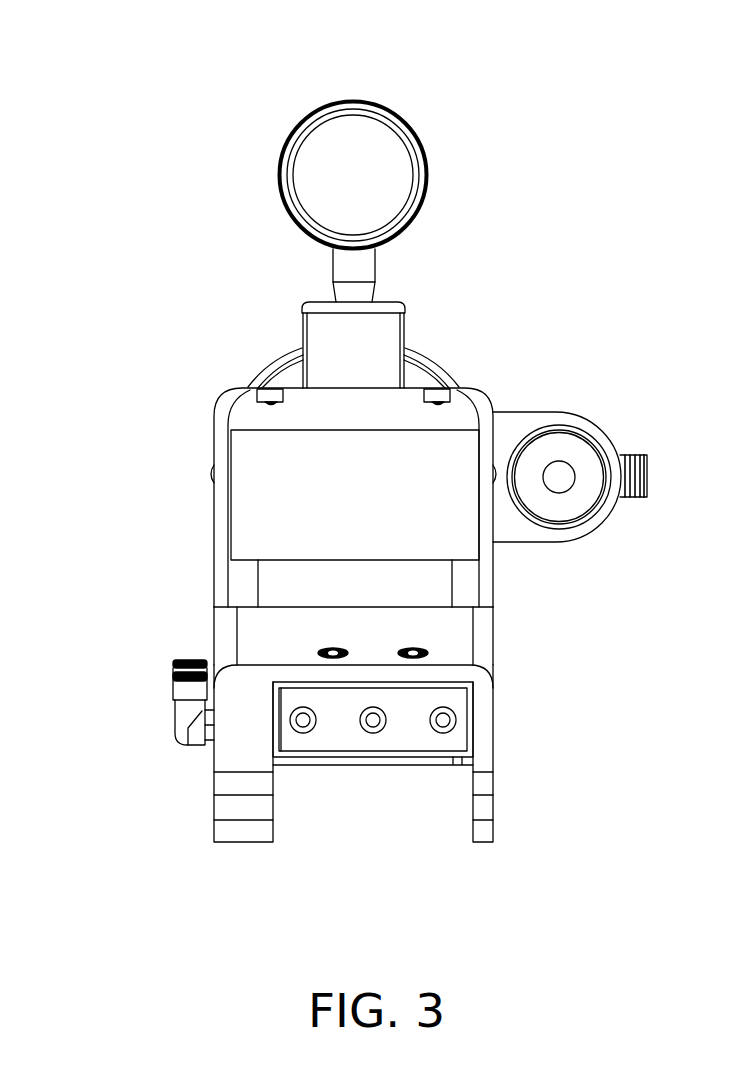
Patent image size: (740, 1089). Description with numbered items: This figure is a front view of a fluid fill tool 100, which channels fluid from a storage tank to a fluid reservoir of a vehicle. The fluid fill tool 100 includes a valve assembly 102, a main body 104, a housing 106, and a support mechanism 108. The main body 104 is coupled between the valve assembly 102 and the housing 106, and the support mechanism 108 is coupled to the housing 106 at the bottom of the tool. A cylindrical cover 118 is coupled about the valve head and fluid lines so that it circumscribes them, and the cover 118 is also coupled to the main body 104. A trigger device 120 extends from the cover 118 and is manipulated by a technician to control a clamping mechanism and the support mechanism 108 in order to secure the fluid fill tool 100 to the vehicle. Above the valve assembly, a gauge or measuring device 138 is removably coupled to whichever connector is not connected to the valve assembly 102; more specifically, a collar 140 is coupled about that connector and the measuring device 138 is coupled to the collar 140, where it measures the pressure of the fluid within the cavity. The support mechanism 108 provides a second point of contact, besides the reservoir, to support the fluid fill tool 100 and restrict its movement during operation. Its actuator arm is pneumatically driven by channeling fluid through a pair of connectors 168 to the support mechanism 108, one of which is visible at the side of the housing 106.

The fluid fill tool 100 is at (106, 106).
The valve assembly 102 is at (472, 361).
The main body 104 is at (255, 512).
The housing 106 is at (447, 635).
The support mechanism 108 is at (373, 790).
The cylindrical cover 118 is at (255, 387).
The trigger device 120 is at (582, 498).
The measuring device 138 is at (318, 186).
The collar 140 is at (383, 322).
The connectors 168 is at (173, 722).